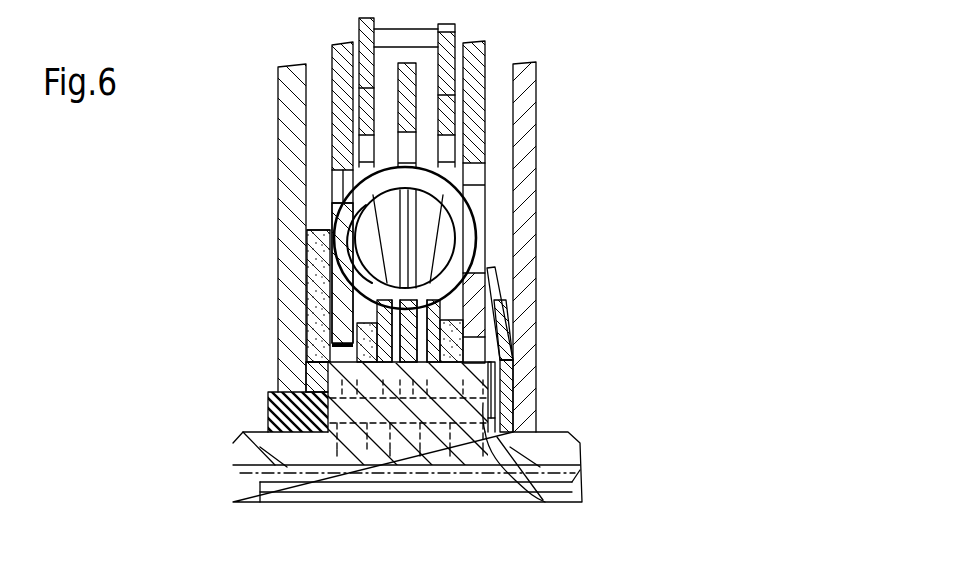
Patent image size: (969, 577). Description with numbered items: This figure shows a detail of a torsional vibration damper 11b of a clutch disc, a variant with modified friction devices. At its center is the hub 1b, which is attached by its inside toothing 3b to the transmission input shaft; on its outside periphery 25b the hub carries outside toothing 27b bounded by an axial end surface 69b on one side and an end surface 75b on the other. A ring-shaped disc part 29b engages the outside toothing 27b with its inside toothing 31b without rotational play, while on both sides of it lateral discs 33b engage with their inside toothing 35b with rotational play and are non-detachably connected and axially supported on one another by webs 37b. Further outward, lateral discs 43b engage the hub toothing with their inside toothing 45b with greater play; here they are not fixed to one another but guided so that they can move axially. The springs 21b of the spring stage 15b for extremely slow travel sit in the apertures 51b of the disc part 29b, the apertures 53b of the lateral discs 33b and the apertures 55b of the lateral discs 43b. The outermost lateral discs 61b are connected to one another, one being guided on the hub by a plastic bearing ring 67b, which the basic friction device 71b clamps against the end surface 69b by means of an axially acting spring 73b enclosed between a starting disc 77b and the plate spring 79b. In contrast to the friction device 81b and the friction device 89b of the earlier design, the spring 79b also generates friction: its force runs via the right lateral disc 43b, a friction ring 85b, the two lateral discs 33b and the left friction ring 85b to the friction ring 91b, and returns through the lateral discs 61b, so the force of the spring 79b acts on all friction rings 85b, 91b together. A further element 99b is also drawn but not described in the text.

The hub 1b is at (577, 448).
The inside toothing 3b is at (550, 477).
The torsional vibration damper 11b is at (594, 66).
The spring stage 15b is at (488, 221).
The springs 21b is at (335, 205).
The outside periphery 25b is at (262, 430).
The outside toothing 27b is at (367, 450).
The disc part 29b is at (416, 119).
The inside toothing 31b is at (420, 450).
The lateral discs 33b is at (362, 93).
The inside toothing 35b is at (390, 450).
The webs 37b is at (430, 36).
The lateral discs 43b is at (336, 48).
The inside toothing 45b is at (337, 450).
The apertures 51b is at (413, 252).
The apertures 53b is at (367, 222).
The apertures 55b is at (348, 175).
The lateral discs 61b is at (291, 80).
The plastic bearing ring 67b is at (278, 393).
The axial end surface 69b is at (317, 417).
The basic friction device 71b is at (545, 412).
The axially acting spring 73b is at (513, 383).
The end surface 75b is at (517, 496).
The starting disc 77b is at (567, 503).
The axially acting spring 79b is at (503, 303).
The friction device 81b is at (350, 343).
The friction rings 85b is at (365, 335).
The friction device 89b is at (313, 267).
The friction ring 91b is at (313, 242).
The thin spacer 99b is at (495, 403).